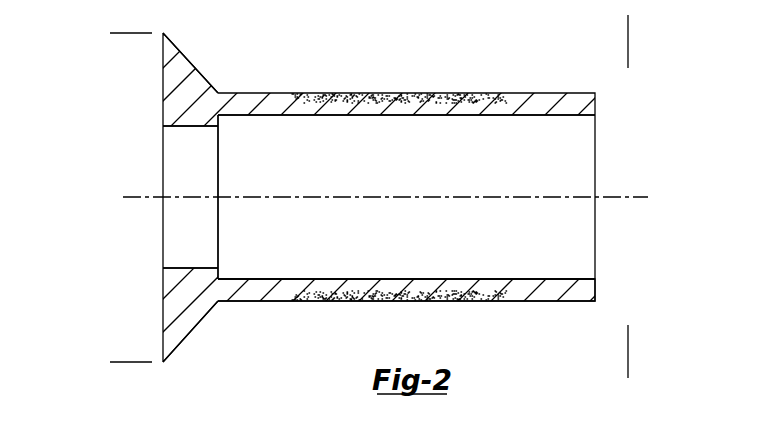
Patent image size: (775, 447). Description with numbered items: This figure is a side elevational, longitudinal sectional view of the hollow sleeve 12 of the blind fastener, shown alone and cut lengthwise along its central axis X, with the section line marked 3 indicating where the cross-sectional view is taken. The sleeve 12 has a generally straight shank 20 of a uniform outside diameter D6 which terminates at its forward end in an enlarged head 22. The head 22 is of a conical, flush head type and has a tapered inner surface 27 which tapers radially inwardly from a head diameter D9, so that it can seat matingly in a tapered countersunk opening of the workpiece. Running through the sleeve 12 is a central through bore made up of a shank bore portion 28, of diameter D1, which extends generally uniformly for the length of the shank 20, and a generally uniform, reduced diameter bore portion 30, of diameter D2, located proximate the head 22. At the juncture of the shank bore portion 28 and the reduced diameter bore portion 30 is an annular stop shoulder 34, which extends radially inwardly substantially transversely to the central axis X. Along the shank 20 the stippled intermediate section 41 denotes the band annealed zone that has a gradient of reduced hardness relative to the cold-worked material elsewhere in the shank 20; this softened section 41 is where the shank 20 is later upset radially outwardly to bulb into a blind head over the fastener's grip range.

The hollow sleeve 12 is at (510, 343).
The shank 20 is at (595, 87).
The enlarged head 22 is at (168, 78).
The tapered inner surface 27 is at (194, 327).
The shank bore portion 28 is at (590, 118).
The reduced diameter bore portion 30 is at (190, 127).
The annular stop shoulder 34 is at (220, 276).
The intermediate section 41 is at (292, 307).
The section line 3- 3 is at (641, 30).
The shank bore diameter D1 is at (499, 126).
The reduced bore diameter D2 is at (203, 137).
The shank outside diameter D6 is at (547, 104).
The head diameter D9 is at (132, 44).
The central axis X is at (628, 197).